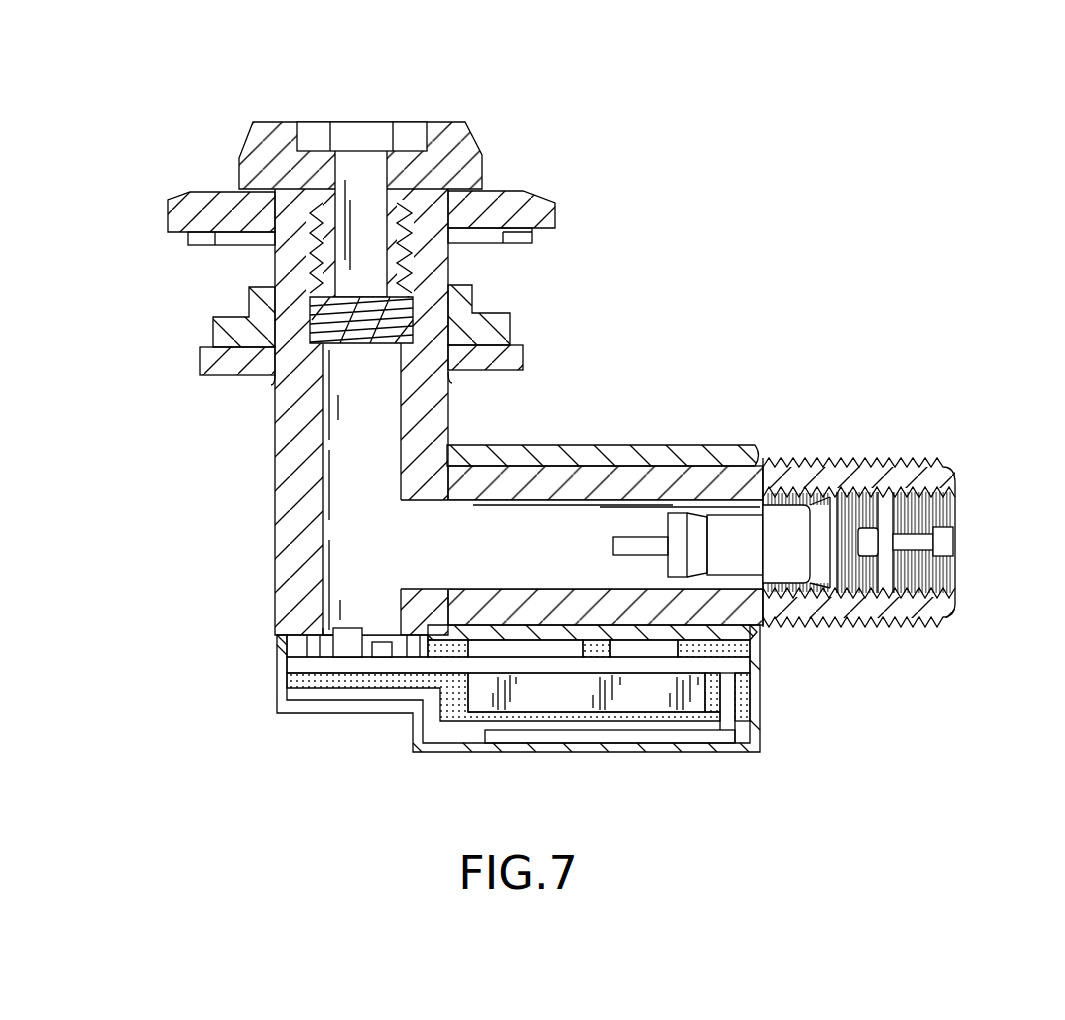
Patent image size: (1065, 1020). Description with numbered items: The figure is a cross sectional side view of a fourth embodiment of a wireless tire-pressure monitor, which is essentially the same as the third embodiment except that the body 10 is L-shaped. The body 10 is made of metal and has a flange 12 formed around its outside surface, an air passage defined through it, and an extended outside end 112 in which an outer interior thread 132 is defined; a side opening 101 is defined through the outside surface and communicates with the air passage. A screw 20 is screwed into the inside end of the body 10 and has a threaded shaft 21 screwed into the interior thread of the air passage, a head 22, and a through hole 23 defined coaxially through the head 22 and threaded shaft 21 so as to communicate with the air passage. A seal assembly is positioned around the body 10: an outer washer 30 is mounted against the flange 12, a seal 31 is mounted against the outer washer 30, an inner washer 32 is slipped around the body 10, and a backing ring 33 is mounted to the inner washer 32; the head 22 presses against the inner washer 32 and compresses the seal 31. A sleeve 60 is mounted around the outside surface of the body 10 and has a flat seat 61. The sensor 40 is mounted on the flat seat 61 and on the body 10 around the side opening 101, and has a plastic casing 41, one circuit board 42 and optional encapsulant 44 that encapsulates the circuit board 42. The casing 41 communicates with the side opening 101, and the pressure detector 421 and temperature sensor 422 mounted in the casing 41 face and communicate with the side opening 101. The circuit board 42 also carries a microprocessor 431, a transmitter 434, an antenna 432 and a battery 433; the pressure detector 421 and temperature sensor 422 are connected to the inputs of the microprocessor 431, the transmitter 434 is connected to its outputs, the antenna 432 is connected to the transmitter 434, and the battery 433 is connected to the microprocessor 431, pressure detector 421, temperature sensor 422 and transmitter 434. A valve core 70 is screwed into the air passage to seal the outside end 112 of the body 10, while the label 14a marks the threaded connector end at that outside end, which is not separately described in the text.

The body 10 is at (467, 422).
The flange 12 is at (268, 378).
The threaded connector end 14a is at (833, 504).
The screw 20 is at (391, 131).
The threaded shaft 21 is at (311, 240).
The head 22 is at (460, 160).
The through hole 23 is at (387, 170).
The outer washer 30 is at (515, 358).
The seal 31 is at (503, 322).
The inner washer 32 is at (543, 208).
The backing ring 33 is at (520, 238).
The sensor 40 is at (493, 722).
The casing 41 is at (468, 748).
The circuit board 42 is at (738, 663).
The encapsulant 44 is at (743, 700).
The sleeve 60 is at (652, 455).
The flat seat 61 is at (737, 640).
The valve core 70 is at (787, 520).
The side opening 101 is at (322, 630).
The outside end 112 is at (947, 473).
The outer interior thread 132 is at (937, 587).
The pressure detector 421 is at (348, 653).
The temperature sensor 422 is at (383, 653).
The microprocessor 431 is at (553, 650).
The antenna 432 is at (720, 735).
The battery 433 is at (657, 700).
The transmitter 434 is at (637, 650).